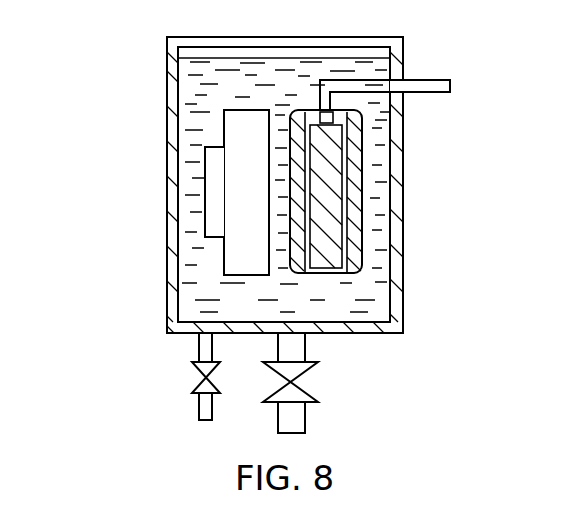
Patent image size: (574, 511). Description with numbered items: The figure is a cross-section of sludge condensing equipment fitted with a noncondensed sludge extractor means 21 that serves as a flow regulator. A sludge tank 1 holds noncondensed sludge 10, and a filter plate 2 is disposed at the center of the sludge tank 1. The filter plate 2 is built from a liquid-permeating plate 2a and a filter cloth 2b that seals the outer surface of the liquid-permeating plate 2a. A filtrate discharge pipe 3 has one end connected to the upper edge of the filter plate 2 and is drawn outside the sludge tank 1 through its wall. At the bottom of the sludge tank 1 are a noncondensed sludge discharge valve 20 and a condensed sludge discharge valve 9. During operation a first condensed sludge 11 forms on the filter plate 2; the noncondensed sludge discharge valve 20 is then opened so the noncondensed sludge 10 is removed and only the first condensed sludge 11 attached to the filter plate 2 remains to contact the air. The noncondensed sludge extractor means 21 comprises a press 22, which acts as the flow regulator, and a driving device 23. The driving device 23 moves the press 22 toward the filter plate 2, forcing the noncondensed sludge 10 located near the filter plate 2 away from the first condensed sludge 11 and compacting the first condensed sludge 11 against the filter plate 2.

The sludge tank 1 is at (165, 265).
The filter plate 2 is at (405, 191).
The liquid-permeating plate 2a is at (328, 227).
The filter cloth 2b is at (340, 202).
The filtrate discharge pipe 3 is at (435, 80).
The condensed sludge discharge valve 9 is at (306, 389).
The noncondensed sludge 10 is at (186, 76).
The first condensed sludge 11 is at (396, 124).
The noncondensed sludge discharge valve 20 is at (198, 384).
The noncondensed sludge extractor means 21 is at (151, 192).
The press 22 is at (223, 136).
The driving device 23 is at (203, 205).